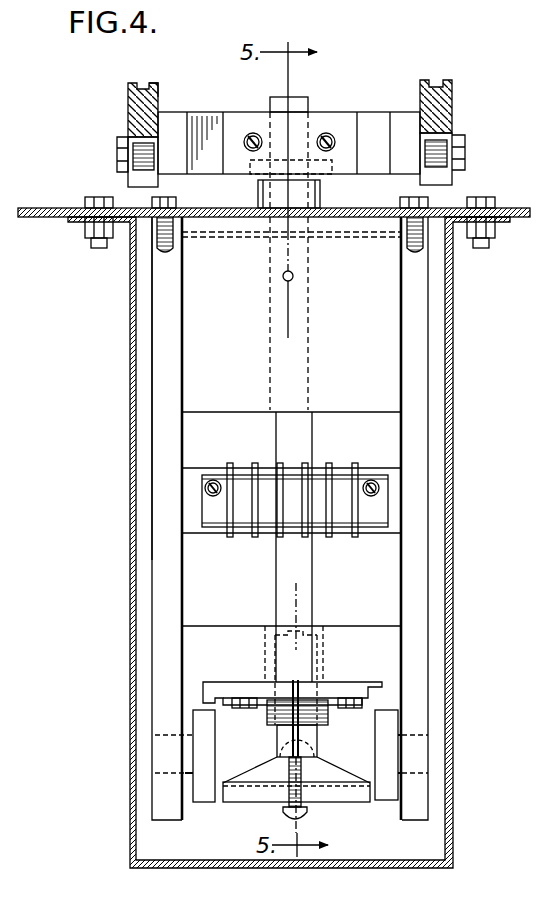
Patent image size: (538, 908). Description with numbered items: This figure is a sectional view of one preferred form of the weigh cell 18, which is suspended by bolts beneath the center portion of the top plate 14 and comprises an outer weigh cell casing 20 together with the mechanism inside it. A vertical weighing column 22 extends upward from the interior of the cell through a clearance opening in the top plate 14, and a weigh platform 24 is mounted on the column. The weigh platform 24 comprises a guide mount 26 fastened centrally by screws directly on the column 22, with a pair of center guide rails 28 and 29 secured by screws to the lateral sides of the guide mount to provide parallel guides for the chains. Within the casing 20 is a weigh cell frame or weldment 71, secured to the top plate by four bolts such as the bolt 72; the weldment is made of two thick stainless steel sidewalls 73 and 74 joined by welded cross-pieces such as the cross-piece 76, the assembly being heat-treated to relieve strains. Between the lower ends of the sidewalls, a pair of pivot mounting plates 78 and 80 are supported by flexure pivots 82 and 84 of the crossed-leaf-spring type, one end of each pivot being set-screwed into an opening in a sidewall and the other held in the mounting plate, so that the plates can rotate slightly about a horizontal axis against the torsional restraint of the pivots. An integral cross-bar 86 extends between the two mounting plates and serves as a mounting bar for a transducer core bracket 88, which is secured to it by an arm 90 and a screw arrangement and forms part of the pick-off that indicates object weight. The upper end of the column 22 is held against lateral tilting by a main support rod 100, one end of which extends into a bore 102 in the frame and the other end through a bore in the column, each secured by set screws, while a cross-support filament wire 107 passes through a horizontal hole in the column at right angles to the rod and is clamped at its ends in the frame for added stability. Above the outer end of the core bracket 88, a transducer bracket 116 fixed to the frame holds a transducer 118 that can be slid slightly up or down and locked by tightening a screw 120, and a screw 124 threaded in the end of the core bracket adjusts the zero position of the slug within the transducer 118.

The top plate 14 is at (38, 207).
The weigh cell 18 is at (150, 338).
The outer weigh cell casing 20 is at (130, 466).
The vertical weighing column 22 is at (288, 563).
The weigh platform 24 is at (128, 122).
The guide mount 26 is at (355, 113).
The center guide rail 28 is at (158, 100).
The center guide rail 29 is at (452, 106).
The weigh cell frame or weldment 71 is at (180, 572).
The bolt 72 is at (177, 206).
The sidewall 73 is at (420, 372).
The sidewall 74 is at (158, 373).
The cross-piece 76 is at (245, 402).
The pivot mounting plate 78 is at (390, 790).
The pivot mounting plate 80 is at (205, 790).
The flexure pivot 82 is at (418, 733).
The flexure pivot 84 is at (160, 772).
The cross-bar 86 is at (365, 757).
The transducer core bracket 88 is at (265, 790).
The arm 90 is at (283, 748).
The main support rod 100 is at (283, 279).
The bore 102 is at (295, 279).
The cross-support filament wire 107 is at (255, 244).
The transducer bracket 116 is at (345, 694).
The transducer 118 is at (305, 734).
The screw 120 is at (330, 718).
The screw 124 is at (303, 773).